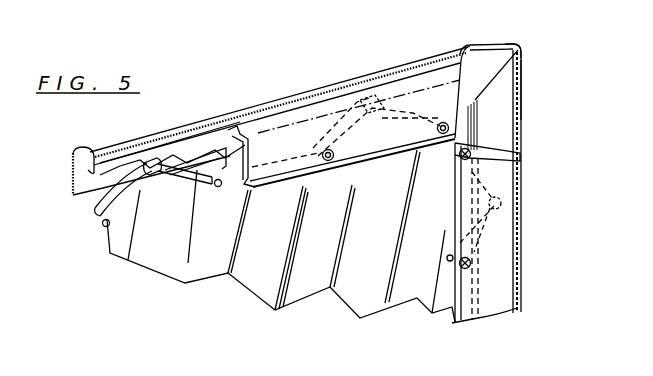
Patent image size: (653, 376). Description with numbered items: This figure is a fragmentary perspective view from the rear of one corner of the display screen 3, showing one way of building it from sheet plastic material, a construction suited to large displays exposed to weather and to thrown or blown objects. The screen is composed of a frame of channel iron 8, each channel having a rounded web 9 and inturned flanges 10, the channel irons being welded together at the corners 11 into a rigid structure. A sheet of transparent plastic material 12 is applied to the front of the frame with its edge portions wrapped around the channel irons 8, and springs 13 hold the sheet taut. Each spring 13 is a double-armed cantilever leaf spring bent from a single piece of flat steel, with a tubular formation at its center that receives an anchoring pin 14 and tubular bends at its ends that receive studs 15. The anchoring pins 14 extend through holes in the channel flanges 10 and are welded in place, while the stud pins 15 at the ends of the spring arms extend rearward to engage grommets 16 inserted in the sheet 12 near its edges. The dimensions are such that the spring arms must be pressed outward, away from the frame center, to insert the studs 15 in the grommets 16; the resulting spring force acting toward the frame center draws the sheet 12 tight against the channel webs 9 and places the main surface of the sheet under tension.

The display screen 3 is at (168, 258).
The channel iron 8 is at (521, 78).
The rounded web 9 is at (90, 152).
The inturned flange 10 is at (88, 183).
The corner 11 is at (518, 44).
The sheet of transparent plastic material 12 is at (270, 236).
The spring 13 is at (96, 212).
The anchoring pin 14 is at (155, 160).
The stud pin 15 is at (103, 222).
The grommet 16 is at (318, 154).